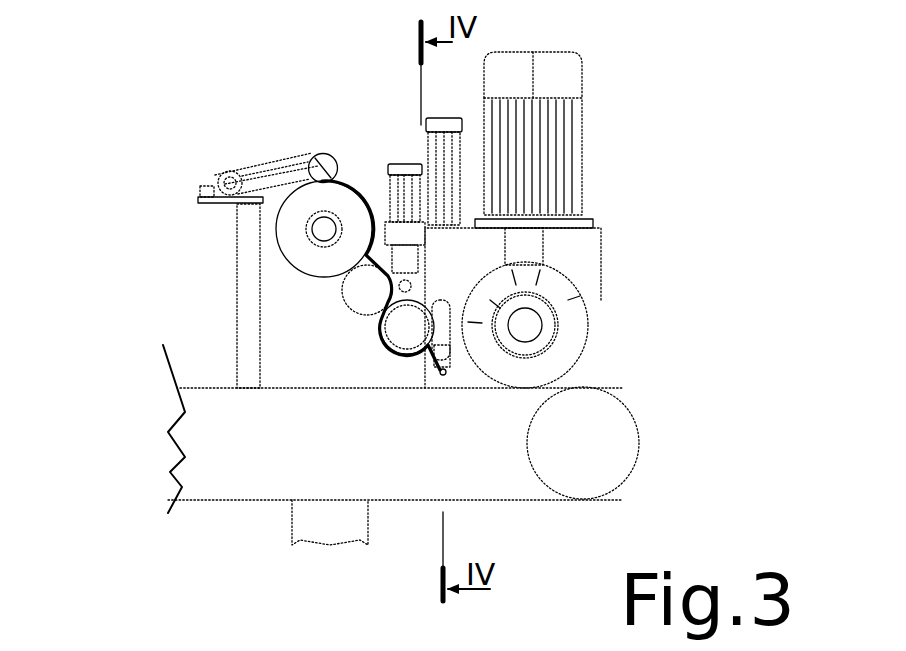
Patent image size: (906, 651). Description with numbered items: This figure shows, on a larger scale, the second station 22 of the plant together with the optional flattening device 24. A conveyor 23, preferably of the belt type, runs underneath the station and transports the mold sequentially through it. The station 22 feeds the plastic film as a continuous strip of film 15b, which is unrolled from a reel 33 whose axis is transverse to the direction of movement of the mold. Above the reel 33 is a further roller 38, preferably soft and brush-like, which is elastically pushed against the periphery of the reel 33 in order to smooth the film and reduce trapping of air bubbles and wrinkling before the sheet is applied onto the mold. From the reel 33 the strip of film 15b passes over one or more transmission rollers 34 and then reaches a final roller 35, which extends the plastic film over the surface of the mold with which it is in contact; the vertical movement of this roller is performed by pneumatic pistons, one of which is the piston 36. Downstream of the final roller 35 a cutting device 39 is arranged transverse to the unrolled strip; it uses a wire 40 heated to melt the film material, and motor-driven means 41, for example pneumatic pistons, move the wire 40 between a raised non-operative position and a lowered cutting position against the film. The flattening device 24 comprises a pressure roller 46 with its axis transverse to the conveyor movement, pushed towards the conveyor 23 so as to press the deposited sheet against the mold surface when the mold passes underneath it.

The second station 22 is at (188, 82).
The conveyor 23 is at (208, 388).
The flattening device 24 is at (630, 221).
The reel 33 is at (285, 253).
The transmission roller 34 is at (360, 295).
The final roller 35 is at (392, 340).
The pneumatic piston 36 is at (393, 170).
The further roller 38 is at (322, 154).
The cutting device 39 is at (456, 353).
The wire 40 is at (443, 366).
The motor-driven means 41 is at (428, 145).
The pressure roller 46 is at (574, 308).
The continuous strip of film 15b is at (431, 367).